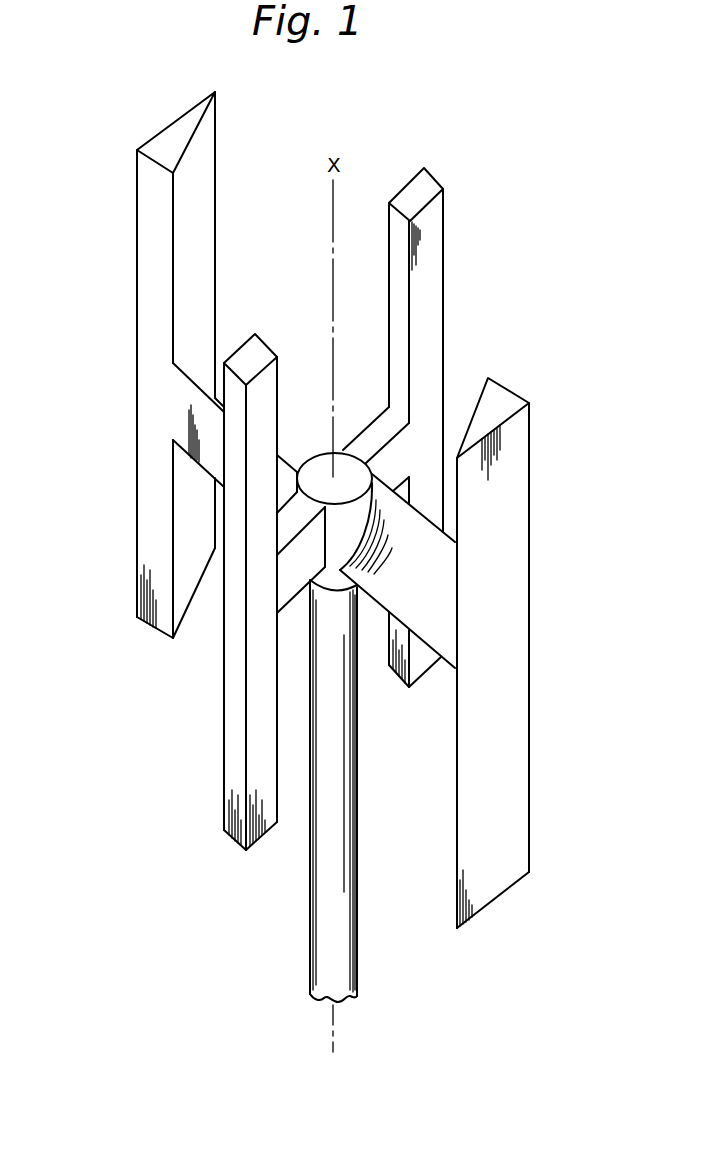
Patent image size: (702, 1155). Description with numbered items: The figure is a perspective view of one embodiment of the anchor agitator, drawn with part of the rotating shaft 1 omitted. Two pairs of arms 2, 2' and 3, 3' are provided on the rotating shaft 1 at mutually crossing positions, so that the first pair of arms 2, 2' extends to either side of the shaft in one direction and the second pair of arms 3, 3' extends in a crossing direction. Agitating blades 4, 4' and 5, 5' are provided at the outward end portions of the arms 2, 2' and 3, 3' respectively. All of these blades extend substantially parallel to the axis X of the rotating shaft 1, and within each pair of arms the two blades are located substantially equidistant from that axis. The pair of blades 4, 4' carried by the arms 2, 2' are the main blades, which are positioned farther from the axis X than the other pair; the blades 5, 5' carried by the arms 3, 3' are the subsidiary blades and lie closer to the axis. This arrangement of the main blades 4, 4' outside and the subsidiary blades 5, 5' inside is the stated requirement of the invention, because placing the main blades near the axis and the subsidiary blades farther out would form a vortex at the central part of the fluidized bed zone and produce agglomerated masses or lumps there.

The rotating shaft 1 is at (343, 923).
The arm 2 is at (397, 607).
The arm 2' is at (190, 425).
The arm 3 is at (376, 439).
The arm 3' is at (301, 572).
The main agitating blade 4 is at (512, 653).
The main agitating blade 4' is at (149, 365).
The subsidiary agitating blade 5 is at (437, 427).
The subsidiary agitating blade 5' is at (268, 592).